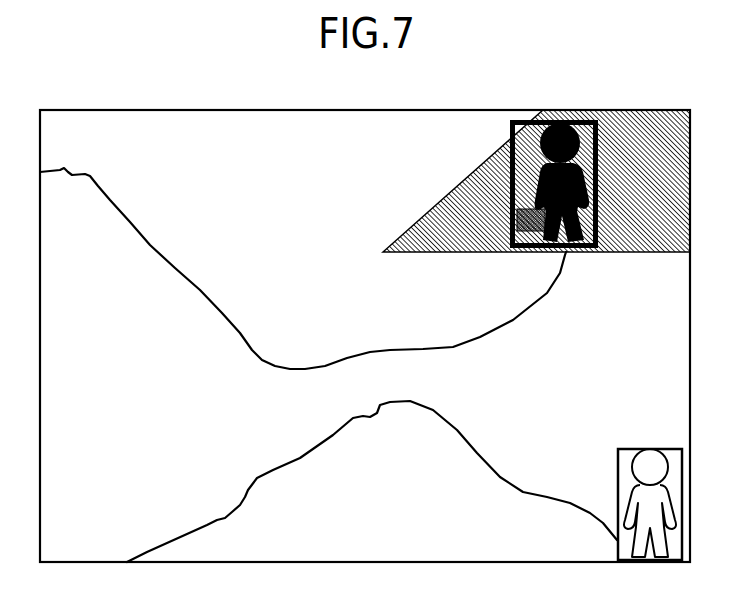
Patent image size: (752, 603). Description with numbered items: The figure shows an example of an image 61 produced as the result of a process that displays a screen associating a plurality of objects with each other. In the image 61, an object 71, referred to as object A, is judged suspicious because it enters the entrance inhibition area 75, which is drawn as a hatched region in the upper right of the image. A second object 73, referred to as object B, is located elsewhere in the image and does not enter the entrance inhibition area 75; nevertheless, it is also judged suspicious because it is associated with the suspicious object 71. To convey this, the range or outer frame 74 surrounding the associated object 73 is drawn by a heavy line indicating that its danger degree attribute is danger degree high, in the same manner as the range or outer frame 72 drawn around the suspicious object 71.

The image 61 is at (366, 111).
The object 71 is at (540, 142).
The range (outer frame) 72 is at (510, 128).
The object 73 is at (630, 468).
The range (outer frame) 74 is at (620, 452).
The entrance inhibition area 75 is at (635, 118).